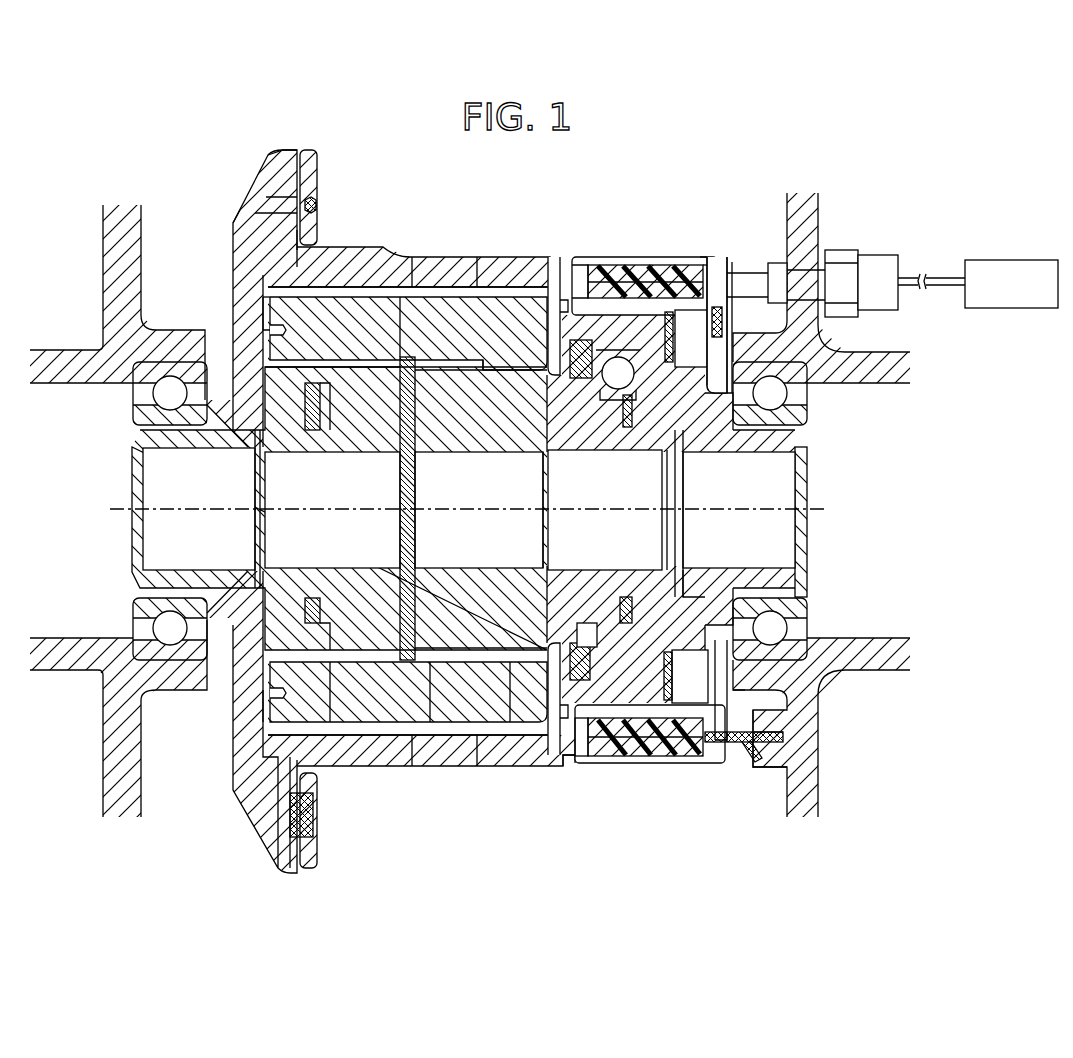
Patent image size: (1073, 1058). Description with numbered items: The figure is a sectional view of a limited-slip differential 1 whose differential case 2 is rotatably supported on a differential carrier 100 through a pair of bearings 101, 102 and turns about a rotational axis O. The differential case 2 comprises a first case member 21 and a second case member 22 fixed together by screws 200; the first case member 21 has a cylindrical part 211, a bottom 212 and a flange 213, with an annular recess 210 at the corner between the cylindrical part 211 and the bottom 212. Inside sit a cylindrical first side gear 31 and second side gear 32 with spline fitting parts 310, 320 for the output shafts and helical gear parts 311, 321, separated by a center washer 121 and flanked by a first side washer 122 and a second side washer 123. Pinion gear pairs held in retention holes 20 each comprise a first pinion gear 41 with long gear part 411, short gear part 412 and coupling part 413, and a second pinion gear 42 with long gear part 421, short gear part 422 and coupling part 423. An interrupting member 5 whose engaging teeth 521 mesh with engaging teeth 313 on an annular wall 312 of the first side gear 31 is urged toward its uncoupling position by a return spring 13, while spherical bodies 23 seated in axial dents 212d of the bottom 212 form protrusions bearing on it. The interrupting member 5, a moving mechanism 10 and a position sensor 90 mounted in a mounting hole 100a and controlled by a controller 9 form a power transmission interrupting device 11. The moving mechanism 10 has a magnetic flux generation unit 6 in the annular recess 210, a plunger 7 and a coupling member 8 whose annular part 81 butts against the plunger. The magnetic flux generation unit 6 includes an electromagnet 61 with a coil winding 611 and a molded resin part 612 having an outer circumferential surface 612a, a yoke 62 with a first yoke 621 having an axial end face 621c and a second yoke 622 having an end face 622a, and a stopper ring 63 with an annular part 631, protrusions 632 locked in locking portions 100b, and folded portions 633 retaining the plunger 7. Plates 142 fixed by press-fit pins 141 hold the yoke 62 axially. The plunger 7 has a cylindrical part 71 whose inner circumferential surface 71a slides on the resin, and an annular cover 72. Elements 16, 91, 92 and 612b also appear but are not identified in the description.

The limited-slip differential 1 is at (237, 184).
The differential case 2 is at (371, 143).
The retention holes 20 is at (388, 284).
The first case member 21 is at (312, 163).
The second case member 22 is at (285, 182).
The screws 200 is at (318, 207).
The flange 213 is at (300, 240).
The cylindrical part 211 is at (535, 257).
The annular recess 210 is at (572, 768).
The bottom 212 is at (705, 575).
The axial dent 212d is at (610, 350).
The spherical body 23 is at (547, 568).
The power transmission interrupting device 11 is at (597, 772).
The return spring 13 is at (590, 637).
The ball 16 is at (613, 392).
The first side gear 31 is at (683, 500).
The second side gear 32 is at (258, 498).
The spline fitting part 310 is at (557, 570).
The spline fitting part 320 is at (360, 569).
The gear part 311 is at (447, 660).
The engaging teeth 313 is at (478, 452).
The gear part 321 is at (375, 370).
The annular wall 312 is at (560, 352).
The first pinion gear 41 is at (270, 330).
The second pinion gear 42 is at (277, 695).
The long gear part 411 is at (478, 303).
The short gear part 412 is at (290, 313).
The coupling part 413 is at (402, 302).
The long gear part 421 is at (345, 708).
The short gear part 422 is at (510, 710).
The coupling part 423 is at (445, 710).
The interrupting member 5 is at (800, 578).
The engaging teeth 521 is at (548, 398).
The magnetic flux generation unit 6 is at (690, 760).
The electromagnet 61 is at (662, 828).
The coil winding 611 is at (635, 762).
The molded resin part 612 is at (660, 762).
The outer circumferential surface 612a is at (618, 768).
The seal lip 612b is at (672, 703).
The yoke 62 is at (598, 202).
The first yoke 621 is at (640, 290).
The axial end face 621c is at (745, 688).
The second yoke 622 is at (607, 282).
The end face 622a is at (588, 290).
The stopper ring 63 is at (782, 738).
The annular part 631 is at (774, 726).
The protrusions 632 is at (728, 742).
The folded portions 633 is at (748, 755).
The plunger 7 is at (701, 196).
The cylindrical part 71 is at (712, 300).
The inner circumferential surface 71a is at (704, 267).
The annular cover 72 is at (728, 297).
The coupling member 8 is at (800, 625).
The annular part 81 is at (724, 332).
The controller 9 is at (1028, 260).
The position sensor 90 is at (882, 246).
The sensor shaft 91 is at (742, 273).
The bolt 92 is at (836, 250).
The differential carrier 100 is at (803, 237).
The mounting hole 100a is at (820, 305).
The locking portions 100b is at (772, 758).
The bearing 101 is at (808, 397).
The bearing 102 is at (133, 622).
The moving mechanism 10 is at (739, 708).
The center washer 121 is at (400, 650).
The first side washer 122 is at (627, 410).
The second side washer 123 is at (322, 380).
The press-fit pins 141 is at (712, 368).
The plates 142 is at (632, 365).
The rotational axis O is at (122, 515).